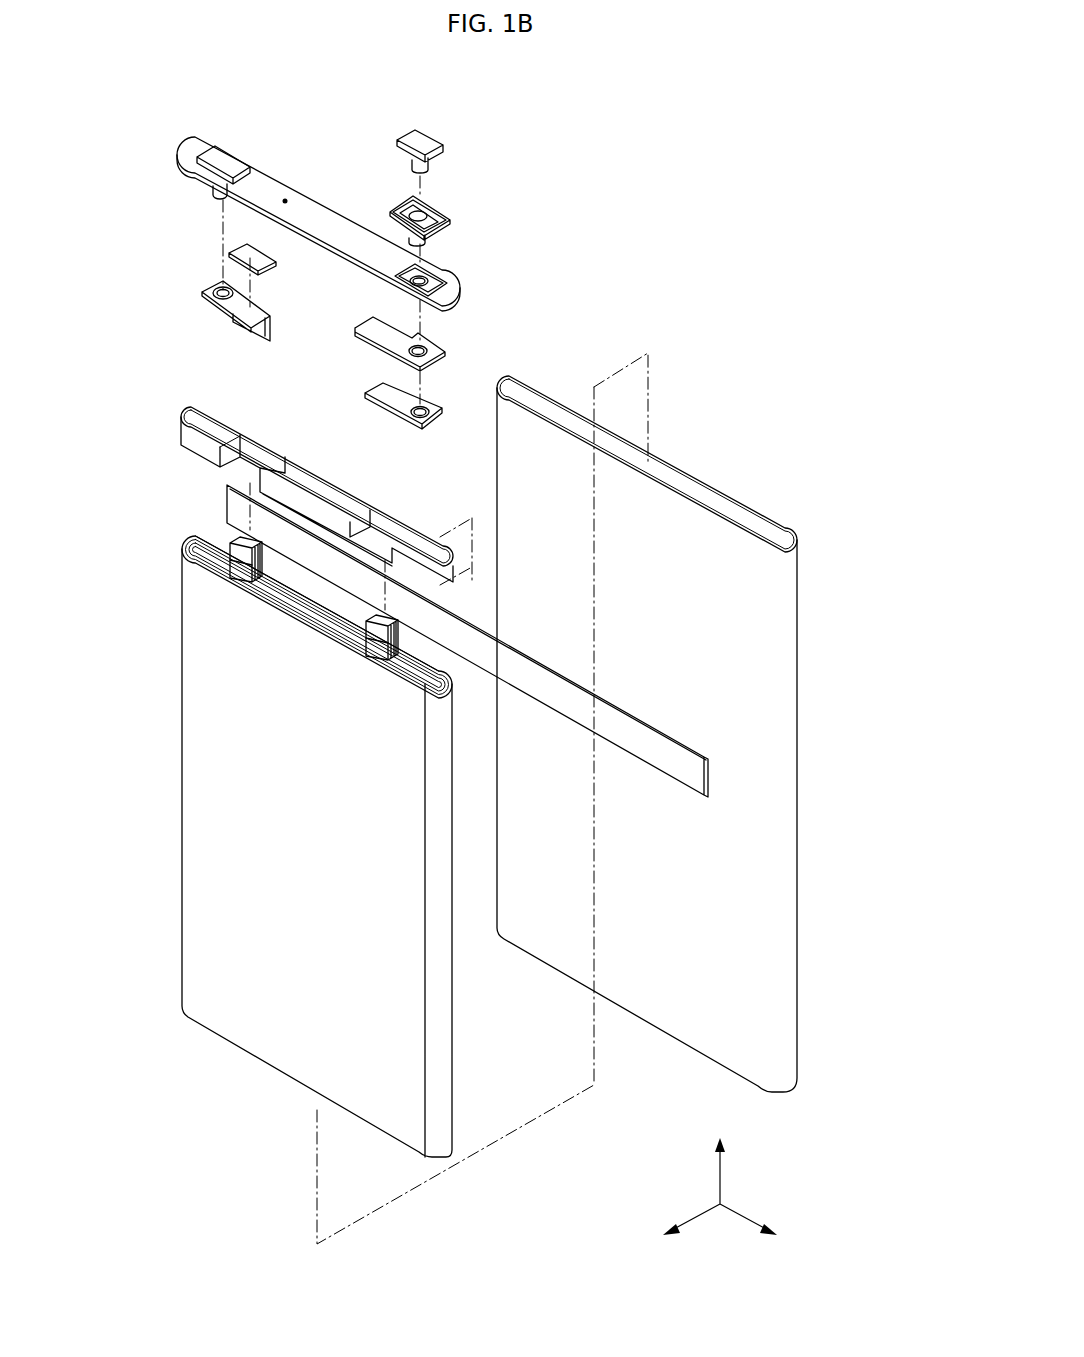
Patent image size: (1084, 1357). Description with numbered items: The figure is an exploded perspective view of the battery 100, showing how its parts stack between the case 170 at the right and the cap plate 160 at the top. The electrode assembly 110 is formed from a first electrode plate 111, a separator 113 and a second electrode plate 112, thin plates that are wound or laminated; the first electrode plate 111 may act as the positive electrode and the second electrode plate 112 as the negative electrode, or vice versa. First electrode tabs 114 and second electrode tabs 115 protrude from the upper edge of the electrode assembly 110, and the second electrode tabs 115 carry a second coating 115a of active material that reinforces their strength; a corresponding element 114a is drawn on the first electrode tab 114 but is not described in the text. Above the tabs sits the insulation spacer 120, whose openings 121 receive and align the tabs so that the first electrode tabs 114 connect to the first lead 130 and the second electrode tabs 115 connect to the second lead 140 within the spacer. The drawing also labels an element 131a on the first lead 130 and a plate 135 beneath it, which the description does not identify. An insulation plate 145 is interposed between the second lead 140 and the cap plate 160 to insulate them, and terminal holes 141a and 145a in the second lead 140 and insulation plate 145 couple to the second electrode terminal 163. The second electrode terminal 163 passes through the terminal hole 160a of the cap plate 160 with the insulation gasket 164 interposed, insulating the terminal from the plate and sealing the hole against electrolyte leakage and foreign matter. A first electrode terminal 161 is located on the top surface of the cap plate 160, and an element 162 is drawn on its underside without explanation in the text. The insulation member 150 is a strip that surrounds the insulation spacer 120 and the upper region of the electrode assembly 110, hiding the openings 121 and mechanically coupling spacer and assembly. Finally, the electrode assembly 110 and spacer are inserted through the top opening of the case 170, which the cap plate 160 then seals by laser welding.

The battery 100 is at (780, 134).
The electrode assembly 110 is at (192, 857).
The first electrode plate 111 is at (198, 560).
The second electrode plate 112 is at (197, 538).
The separator 113 is at (192, 543).
The first electrode tabs 114 is at (259, 566).
The first electrode tab front face 114a is at (236, 564).
The second electrode tabs 115 is at (394, 643).
The second coating 115a is at (371, 641).
The insulation spacer 120 is at (170, 400).
The openings 121 is at (243, 468).
The first lead 130 is at (212, 289).
The first lead plate hole 131a is at (206, 302).
The insulating plate 135 is at (272, 264).
The second lead 140 is at (394, 402).
The terminal hole 141a is at (431, 421).
The insulation plate 145 is at (446, 349).
The terminal hole 145a is at (428, 344).
The insulation member 150 is at (658, 747).
The cap plate 160 is at (166, 126).
The terminal hole 160a is at (446, 273).
The first electrode terminal 161 is at (229, 158).
The electrolyte injection plug 162 is at (212, 190).
The second electrode terminal 163 is at (426, 140).
The insulation gasket 164 is at (440, 208).
The case 170 is at (786, 878).